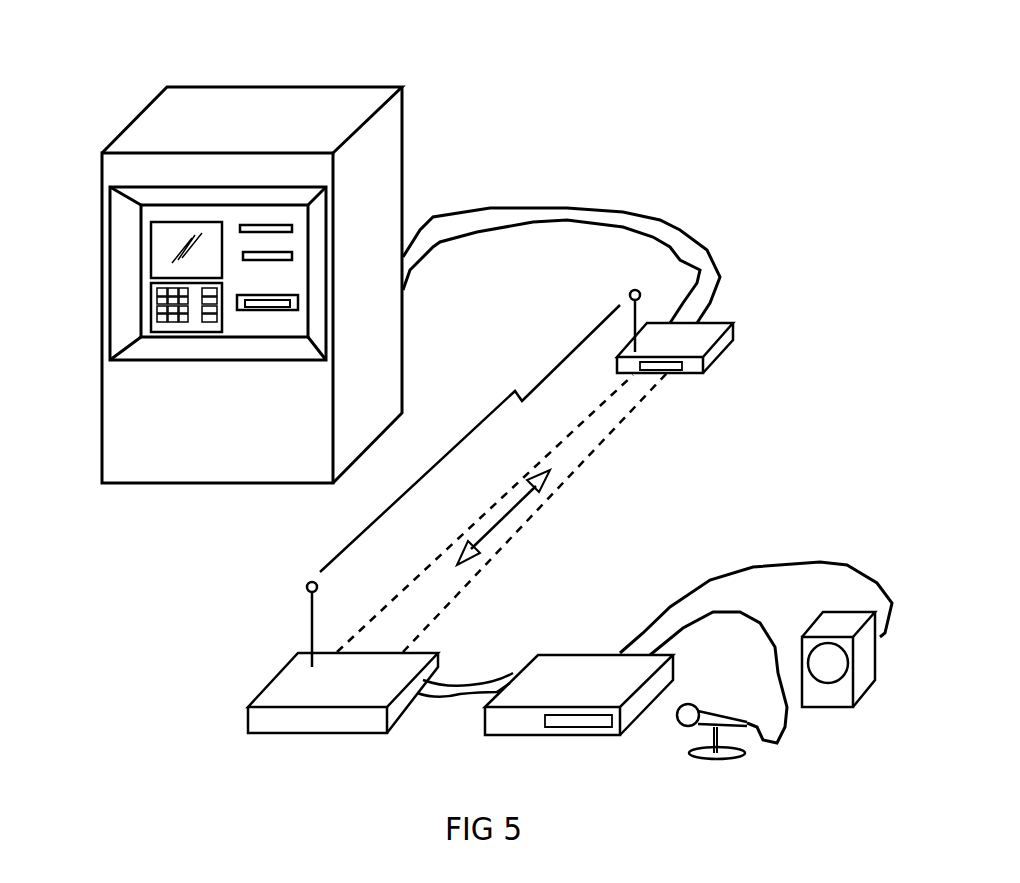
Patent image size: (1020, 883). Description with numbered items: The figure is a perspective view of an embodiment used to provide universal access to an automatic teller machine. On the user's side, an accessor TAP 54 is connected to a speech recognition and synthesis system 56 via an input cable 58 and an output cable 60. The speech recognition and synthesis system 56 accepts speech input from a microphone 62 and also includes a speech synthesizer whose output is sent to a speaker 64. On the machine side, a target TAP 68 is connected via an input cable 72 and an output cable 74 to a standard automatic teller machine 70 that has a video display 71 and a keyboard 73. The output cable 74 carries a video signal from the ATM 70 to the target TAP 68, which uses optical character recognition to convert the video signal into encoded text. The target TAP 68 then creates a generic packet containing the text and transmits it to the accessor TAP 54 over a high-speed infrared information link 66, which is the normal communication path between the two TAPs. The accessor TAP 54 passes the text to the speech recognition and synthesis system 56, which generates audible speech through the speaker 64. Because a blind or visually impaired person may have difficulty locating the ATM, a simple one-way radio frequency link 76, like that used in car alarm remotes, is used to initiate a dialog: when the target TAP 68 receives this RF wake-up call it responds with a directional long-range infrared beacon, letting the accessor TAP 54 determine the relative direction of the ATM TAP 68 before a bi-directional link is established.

The accessor TAP 54 is at (260, 692).
The speech recognition and synthesis system 56 is at (570, 655).
The input cable 58 is at (487, 677).
The output cable 60 is at (437, 700).
The microphone 62 is at (678, 725).
The speaker 64 is at (847, 705).
The high-speed infrared information link 66 is at (541, 507).
The target TAP 68 is at (715, 357).
The automatic teller machine (ATM) 70 is at (322, 87).
The video display 71 is at (151, 253).
The input cable 72 is at (533, 223).
The keyboard 73 is at (165, 318).
The output cable 74 is at (500, 207).
The one-way radio frequency (RF) link 76 is at (487, 417).